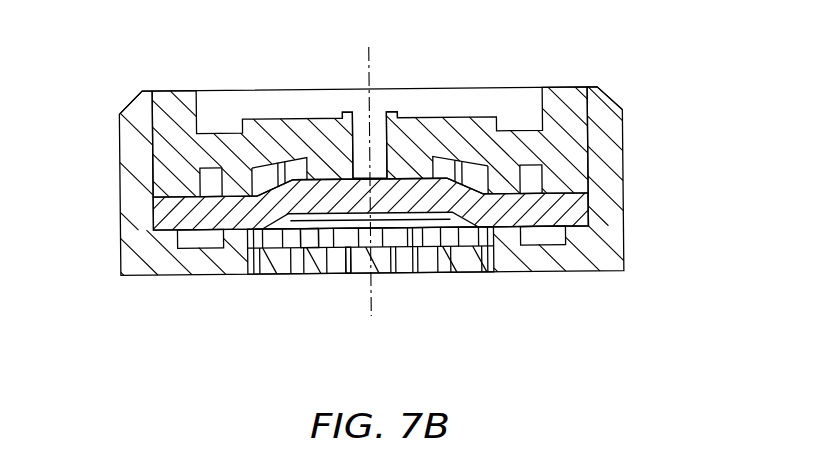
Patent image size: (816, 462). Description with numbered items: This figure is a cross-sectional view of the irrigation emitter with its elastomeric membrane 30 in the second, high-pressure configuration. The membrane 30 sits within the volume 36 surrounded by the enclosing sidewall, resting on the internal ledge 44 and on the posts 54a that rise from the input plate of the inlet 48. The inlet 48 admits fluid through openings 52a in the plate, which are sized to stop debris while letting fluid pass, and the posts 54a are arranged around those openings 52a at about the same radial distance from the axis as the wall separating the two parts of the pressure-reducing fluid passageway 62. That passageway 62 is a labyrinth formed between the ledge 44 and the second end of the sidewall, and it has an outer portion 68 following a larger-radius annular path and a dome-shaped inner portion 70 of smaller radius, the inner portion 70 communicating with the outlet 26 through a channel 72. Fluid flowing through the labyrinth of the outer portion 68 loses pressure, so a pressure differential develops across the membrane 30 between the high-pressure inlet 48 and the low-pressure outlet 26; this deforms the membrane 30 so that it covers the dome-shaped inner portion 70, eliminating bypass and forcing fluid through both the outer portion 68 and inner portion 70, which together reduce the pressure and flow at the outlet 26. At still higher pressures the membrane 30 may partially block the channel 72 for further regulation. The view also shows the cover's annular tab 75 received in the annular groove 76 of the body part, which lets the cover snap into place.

The outlet 26 is at (362, 122).
The membrane 30 is at (405, 186).
The channel 72 is at (419, 175).
The inner portion 70 is at (480, 177).
The fluid passageway 62 is at (578, 224).
The annular groove 76 is at (138, 98).
The annular tab 75 is at (594, 105).
The internal ledge 44 is at (168, 237).
The post 54a is at (308, 245).
The opening 52a is at (348, 262).
The inlet 48 is at (423, 263).
The volume 36 is at (543, 242).
The outer portion 68 is at (579, 232).